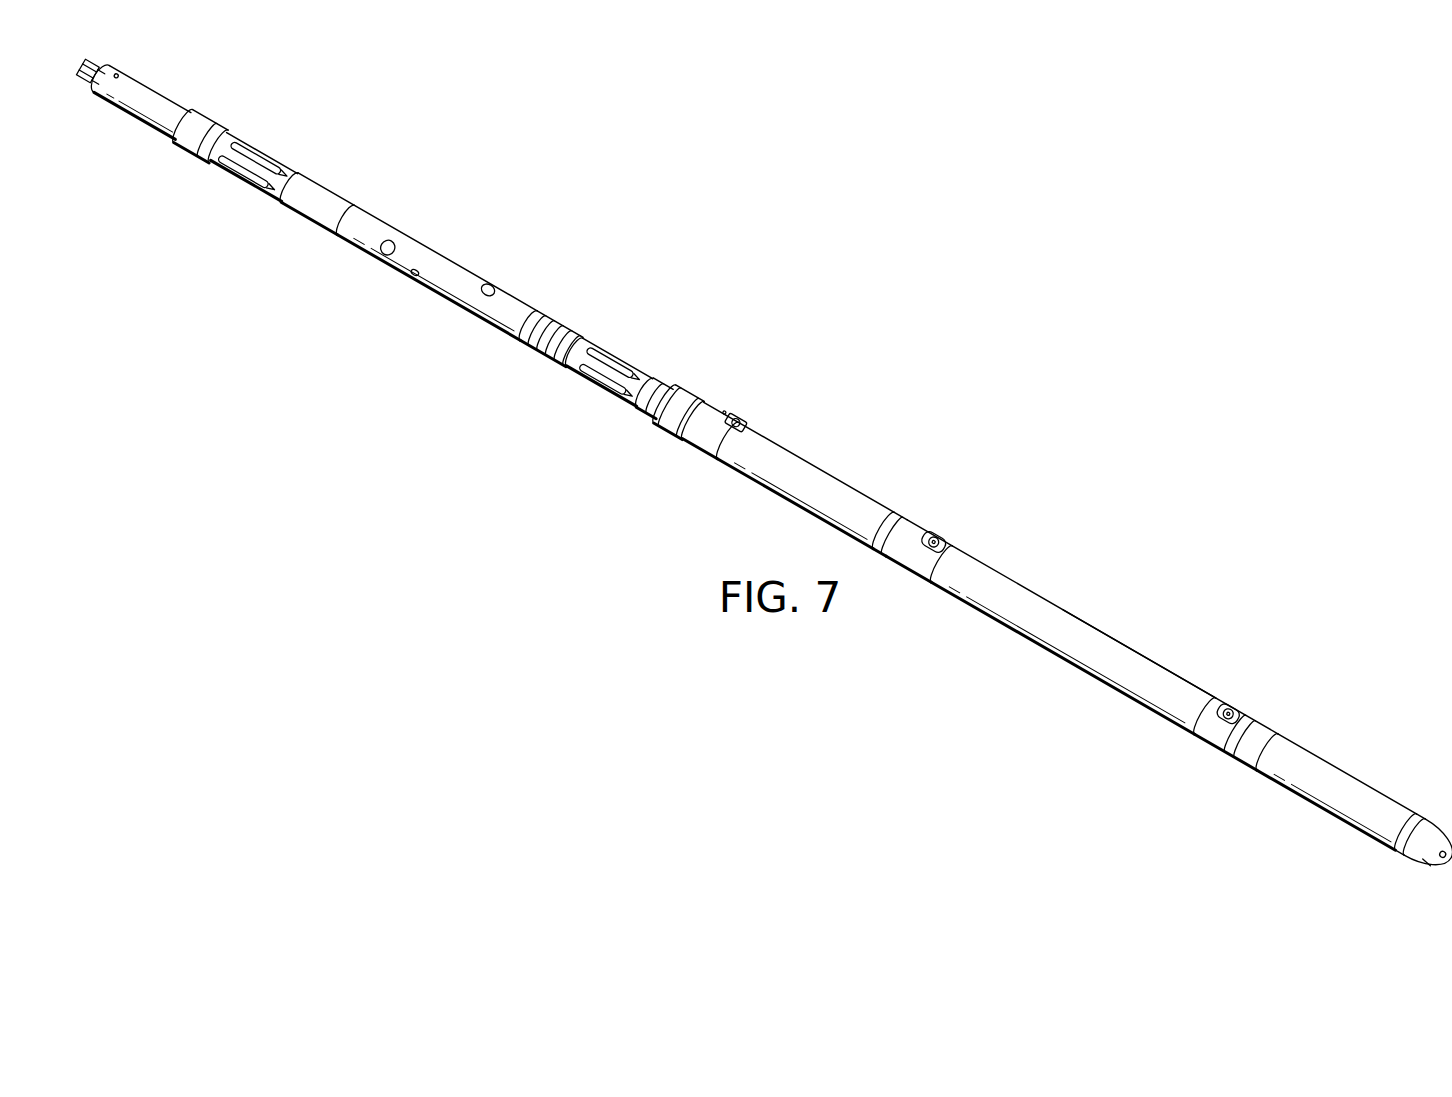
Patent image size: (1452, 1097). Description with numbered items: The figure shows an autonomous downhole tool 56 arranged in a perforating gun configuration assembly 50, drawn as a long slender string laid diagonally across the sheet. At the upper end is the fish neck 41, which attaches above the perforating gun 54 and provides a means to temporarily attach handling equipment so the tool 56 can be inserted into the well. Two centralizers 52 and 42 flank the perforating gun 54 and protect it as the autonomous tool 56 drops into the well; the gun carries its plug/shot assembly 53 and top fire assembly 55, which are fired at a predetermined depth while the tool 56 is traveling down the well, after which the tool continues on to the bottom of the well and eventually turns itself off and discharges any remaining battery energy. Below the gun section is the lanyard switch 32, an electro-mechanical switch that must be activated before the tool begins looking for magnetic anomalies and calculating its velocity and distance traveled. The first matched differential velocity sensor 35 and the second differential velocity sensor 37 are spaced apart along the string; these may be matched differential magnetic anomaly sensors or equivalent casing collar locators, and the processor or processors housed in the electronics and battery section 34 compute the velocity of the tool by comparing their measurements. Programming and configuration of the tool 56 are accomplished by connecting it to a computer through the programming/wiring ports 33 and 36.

The perforating gun configuration assembly 50 is at (866, 252).
The fish neck 41 is at (152, 84).
The centralizer 52 is at (260, 142).
The plug/shot assembly 53 is at (333, 190).
The perforating gun 54 is at (436, 249).
The centralizer 42 is at (617, 350).
The top fire assembly 55 is at (675, 386).
The lanyard switch 32 is at (733, 411).
The first matched differential velocity sensor 35 is at (836, 473).
The programming/wiring port 33 is at (935, 536).
The electronics and battery section 34 is at (1045, 594).
The autonomous tool 56 is at (1133, 645).
The programming/wiring port 36 is at (1232, 700).
The second differential velocity sensor 37 is at (1345, 768).